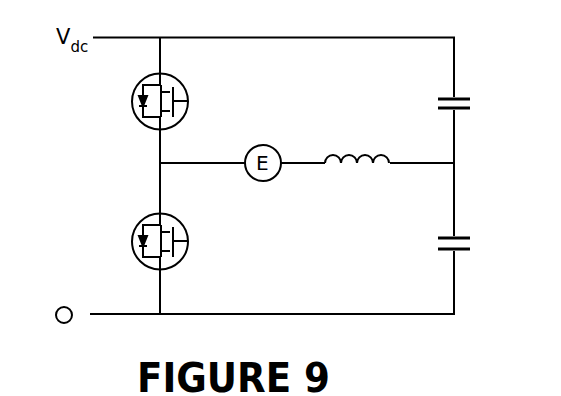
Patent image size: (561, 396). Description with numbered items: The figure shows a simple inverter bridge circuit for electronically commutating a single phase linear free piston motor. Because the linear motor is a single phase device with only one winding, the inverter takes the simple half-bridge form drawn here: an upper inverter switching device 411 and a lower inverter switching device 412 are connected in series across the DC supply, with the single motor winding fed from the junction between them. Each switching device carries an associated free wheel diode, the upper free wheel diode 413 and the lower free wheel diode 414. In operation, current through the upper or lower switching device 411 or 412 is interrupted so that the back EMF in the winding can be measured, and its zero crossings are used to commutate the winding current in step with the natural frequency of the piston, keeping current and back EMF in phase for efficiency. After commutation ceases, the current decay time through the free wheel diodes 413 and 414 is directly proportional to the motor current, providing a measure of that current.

The upper inverter switching device 411 is at (178, 101).
The lower inverter switching device 412 is at (176, 243).
The free wheel diode 413 is at (138, 103).
The free wheel diode 414 is at (140, 243).